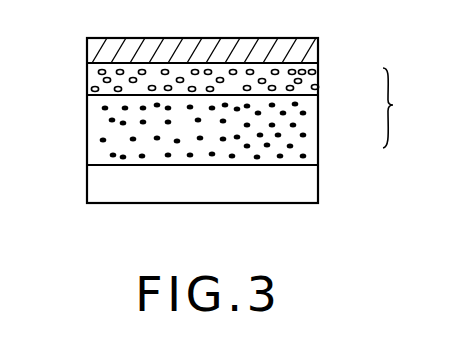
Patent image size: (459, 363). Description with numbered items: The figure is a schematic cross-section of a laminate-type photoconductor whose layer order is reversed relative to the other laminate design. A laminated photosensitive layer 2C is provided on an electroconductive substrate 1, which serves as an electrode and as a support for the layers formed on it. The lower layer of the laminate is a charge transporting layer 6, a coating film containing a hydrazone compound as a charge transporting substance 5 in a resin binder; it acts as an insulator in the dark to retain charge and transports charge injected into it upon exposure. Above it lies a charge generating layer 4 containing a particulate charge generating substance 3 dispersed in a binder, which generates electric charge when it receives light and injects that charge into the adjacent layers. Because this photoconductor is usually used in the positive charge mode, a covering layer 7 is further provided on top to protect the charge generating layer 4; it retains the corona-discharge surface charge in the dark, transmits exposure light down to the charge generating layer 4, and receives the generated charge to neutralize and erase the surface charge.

The electroconductive substrate 1 is at (305, 187).
The laminated photosensitive layer 2C is at (405, 108).
The charge generating substance 3 is at (99, 73).
The charge generating layer 4 is at (208, 82).
The charge transporting substance 5 is at (102, 128).
The charge transporting layer 6 is at (208, 127).
The covering layer 7 is at (305, 56).